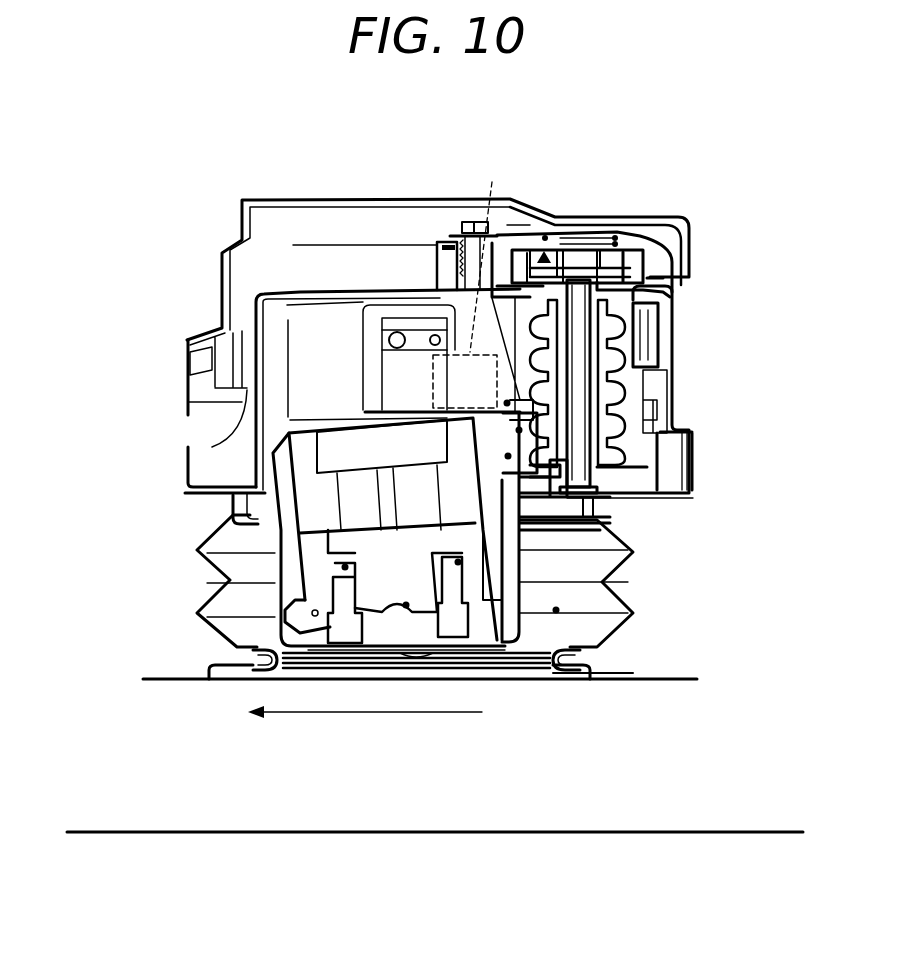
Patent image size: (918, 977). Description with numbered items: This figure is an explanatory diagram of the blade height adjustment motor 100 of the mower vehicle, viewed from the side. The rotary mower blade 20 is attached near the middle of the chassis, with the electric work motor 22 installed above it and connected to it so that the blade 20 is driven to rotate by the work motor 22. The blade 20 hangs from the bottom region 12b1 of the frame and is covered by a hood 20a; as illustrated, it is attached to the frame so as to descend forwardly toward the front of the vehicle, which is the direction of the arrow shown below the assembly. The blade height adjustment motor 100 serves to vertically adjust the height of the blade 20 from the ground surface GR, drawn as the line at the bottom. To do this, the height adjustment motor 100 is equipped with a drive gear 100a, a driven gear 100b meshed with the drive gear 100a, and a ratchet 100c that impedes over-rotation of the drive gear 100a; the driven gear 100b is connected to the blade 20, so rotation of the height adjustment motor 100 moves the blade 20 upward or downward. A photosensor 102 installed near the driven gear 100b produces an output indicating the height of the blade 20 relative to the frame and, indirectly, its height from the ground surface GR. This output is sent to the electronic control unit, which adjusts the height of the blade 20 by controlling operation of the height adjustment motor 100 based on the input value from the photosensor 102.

The photosensor 102 is at (476, 281).
The ratchet 100c is at (647, 268).
The blade height adjustment motor 100 is at (657, 338).
The drive gear 100a is at (620, 382).
The driven gear 100b is at (550, 452).
The bottom region of the frame 12b1 is at (252, 465).
The mower blade 20 is at (290, 612).
The hood of the blade 20a is at (207, 600).
The work motor 22 is at (477, 553).
The ground surface GR is at (603, 830).